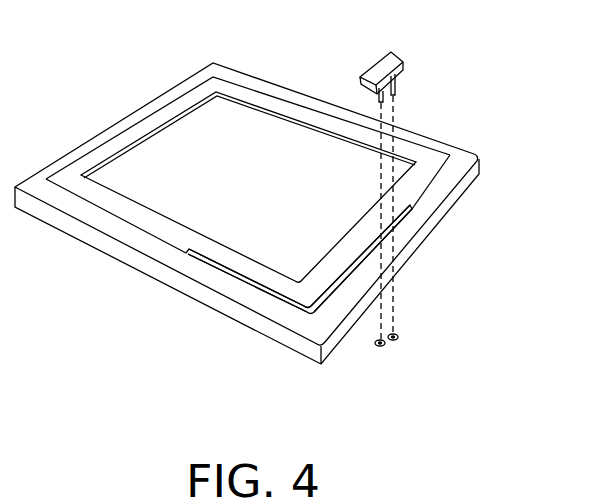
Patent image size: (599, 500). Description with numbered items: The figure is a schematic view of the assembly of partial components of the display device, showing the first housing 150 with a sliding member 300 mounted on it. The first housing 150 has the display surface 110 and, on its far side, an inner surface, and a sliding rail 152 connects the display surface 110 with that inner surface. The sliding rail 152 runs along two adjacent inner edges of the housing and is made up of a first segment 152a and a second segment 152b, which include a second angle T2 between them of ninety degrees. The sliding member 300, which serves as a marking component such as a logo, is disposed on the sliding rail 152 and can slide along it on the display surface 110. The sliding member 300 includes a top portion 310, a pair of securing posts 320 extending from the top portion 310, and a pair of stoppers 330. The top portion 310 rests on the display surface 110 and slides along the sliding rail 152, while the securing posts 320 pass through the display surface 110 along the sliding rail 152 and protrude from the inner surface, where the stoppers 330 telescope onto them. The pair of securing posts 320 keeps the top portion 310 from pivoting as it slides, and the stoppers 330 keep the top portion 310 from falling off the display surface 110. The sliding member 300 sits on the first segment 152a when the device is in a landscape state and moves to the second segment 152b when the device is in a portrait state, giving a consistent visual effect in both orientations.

The display surface 110 is at (145, 177).
The first housing 150 is at (234, 68).
The sliding rail 152 is at (397, 400).
The first segment 152a is at (235, 280).
The second segment 152b is at (353, 280).
The sliding member 300 is at (457, 174).
The top portion 310 is at (392, 62).
The securing posts 320 is at (400, 83).
The stoppers 330 is at (388, 346).
The second angle T2 is at (333, 285).